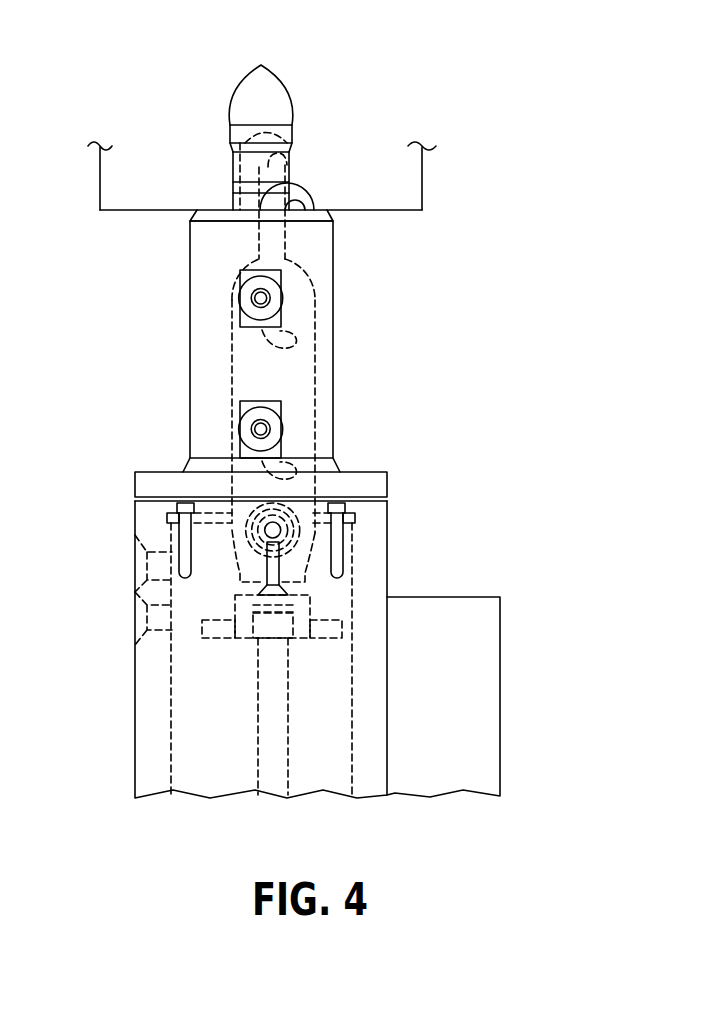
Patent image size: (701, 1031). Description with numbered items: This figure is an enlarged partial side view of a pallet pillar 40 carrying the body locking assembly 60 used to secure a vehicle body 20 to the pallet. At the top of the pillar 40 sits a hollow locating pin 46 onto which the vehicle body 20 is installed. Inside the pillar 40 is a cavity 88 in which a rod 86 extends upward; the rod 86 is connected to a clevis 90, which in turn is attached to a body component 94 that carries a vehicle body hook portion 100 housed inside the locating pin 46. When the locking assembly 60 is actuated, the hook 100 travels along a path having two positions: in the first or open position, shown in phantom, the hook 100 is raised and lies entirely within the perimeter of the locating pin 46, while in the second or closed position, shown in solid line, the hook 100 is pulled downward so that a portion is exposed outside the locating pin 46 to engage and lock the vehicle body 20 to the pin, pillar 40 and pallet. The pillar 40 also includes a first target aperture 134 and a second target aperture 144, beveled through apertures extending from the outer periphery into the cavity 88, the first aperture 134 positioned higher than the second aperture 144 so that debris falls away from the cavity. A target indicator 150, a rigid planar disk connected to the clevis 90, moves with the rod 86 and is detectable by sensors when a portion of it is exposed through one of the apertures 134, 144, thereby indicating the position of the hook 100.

The vehicle body 20 is at (422, 175).
The pillar 40 is at (392, 661).
The locating pin 46 is at (240, 95).
The body locking assembly 60 is at (364, 84).
The rod 86 is at (272, 757).
The cavity 88 is at (193, 735).
The clevis 90 is at (293, 600).
The body component 94 is at (315, 368).
The vehicle body hook portion 100 is at (307, 192).
The first target aperture 134 is at (137, 562).
The second target aperture 144 is at (137, 620).
The target indicator 150 is at (290, 573).